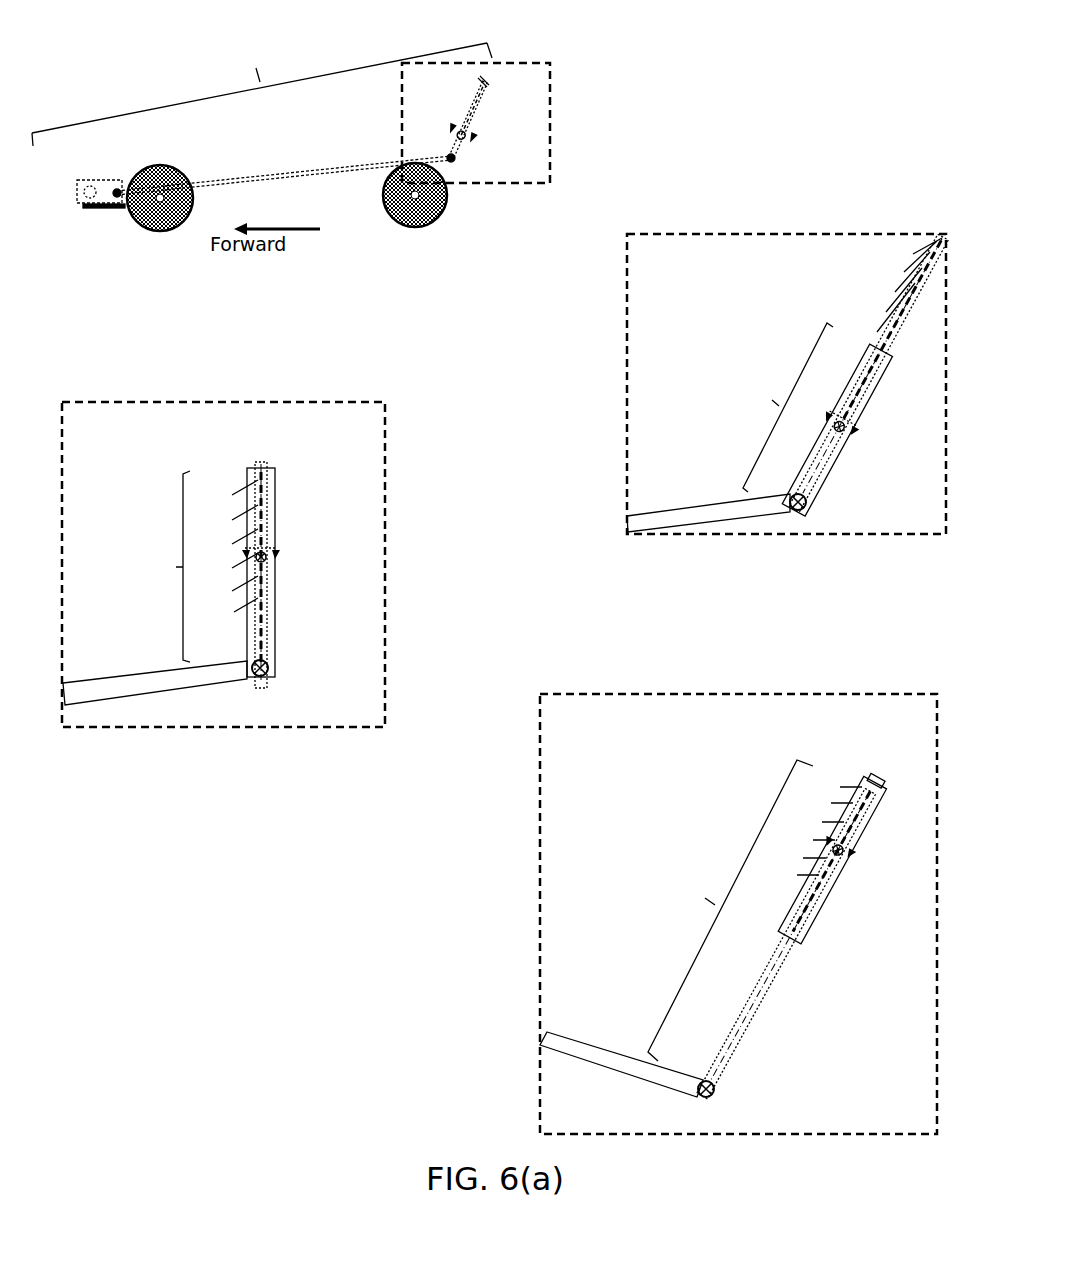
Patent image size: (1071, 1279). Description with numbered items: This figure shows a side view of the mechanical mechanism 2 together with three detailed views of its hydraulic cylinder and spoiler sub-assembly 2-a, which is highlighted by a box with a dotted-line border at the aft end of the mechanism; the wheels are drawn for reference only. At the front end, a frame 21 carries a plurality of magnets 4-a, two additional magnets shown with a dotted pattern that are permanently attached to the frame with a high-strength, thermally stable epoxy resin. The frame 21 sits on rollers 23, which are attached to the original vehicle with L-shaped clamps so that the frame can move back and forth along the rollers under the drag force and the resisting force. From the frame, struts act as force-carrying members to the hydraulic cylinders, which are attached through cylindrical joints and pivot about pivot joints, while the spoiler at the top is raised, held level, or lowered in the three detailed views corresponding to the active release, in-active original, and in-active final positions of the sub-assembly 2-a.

The mechanical mechanism 2 is at (254, 68).
The hydraulic cylinders and spoiler sub-assembly 2-a is at (556, 122).
The frame 21 is at (86, 182).
The plurality of magnets 4-a is at (87, 196).
The rollers 23 is at (101, 208).